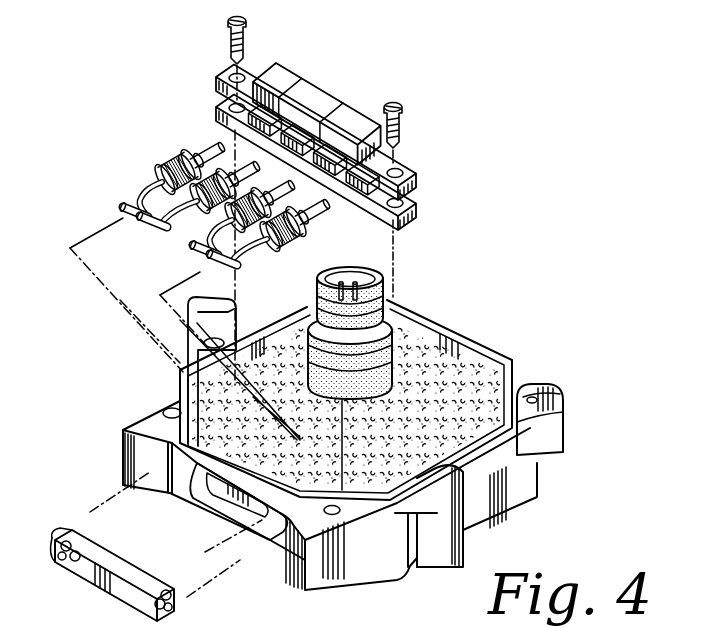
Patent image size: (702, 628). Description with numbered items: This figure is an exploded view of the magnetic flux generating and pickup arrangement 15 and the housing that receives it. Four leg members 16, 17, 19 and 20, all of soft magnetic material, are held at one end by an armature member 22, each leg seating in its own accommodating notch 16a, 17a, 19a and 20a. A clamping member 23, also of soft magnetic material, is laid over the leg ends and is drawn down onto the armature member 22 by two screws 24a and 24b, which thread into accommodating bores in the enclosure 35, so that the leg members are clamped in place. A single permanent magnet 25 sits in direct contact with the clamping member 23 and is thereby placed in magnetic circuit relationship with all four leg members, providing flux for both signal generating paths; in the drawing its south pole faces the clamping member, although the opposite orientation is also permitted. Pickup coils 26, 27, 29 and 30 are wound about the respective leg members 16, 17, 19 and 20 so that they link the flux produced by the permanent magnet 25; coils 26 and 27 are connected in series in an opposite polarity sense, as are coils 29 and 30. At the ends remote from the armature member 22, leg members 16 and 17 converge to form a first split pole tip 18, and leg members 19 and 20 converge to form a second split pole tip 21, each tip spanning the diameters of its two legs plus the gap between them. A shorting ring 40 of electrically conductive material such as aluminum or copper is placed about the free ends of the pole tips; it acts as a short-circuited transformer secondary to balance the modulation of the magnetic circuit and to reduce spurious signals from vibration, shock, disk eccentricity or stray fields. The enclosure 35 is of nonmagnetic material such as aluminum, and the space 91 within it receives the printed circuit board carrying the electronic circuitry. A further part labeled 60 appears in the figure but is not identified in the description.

The magnetic flux generating and pickup arrangement 15 is at (295, 232).
The leg member 16 is at (156, 191).
The accommodating notch 16a is at (228, 128).
The leg member 17 is at (127, 199).
The accommodating notch 17a is at (288, 142).
The first split pole tip 18 is at (117, 233).
The leg member 19 is at (209, 203).
The accommodating notch 19a is at (275, 188).
The leg member 20 is at (272, 243).
The accommodating notch 20a is at (376, 178).
The second split pole tip 21 is at (174, 262).
The armature member 22 is at (412, 206).
The clamping member 23 is at (408, 176).
The screw 24a is at (246, 33).
The screw 24b is at (400, 115).
The permanent magnet 25 is at (355, 118).
The pickup coil 26 is at (161, 143).
The pickup coil 27 is at (254, 174).
The pickup coil 29 is at (299, 248).
The pickup coil 30 is at (316, 238).
The enclosure 35 is at (485, 505).
The shorting ring 40 is at (135, 558).
The cover 60 is at (262, 614).
The space 91 is at (463, 377).